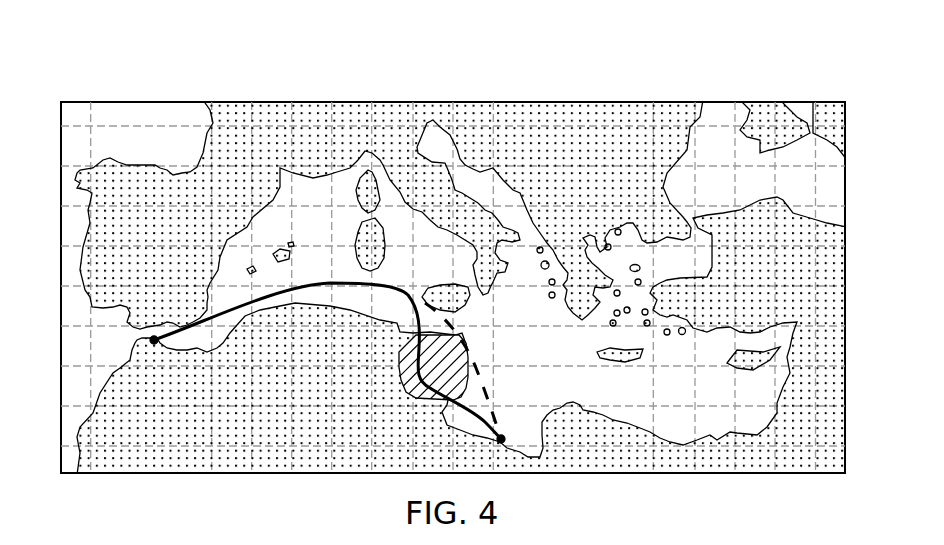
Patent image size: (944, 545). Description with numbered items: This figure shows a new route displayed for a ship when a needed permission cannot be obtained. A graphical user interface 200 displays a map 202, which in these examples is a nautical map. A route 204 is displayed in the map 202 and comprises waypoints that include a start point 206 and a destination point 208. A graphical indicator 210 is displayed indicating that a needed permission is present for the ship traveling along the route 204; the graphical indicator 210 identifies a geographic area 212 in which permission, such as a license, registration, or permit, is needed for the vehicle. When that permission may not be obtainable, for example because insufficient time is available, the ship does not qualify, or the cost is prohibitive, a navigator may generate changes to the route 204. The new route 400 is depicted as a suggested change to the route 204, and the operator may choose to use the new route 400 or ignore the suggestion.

The graphical user interface 200 is at (604, 62).
The map 202 is at (322, 101).
The route 204 is at (336, 280).
The start point 206 is at (155, 346).
The destination point 208 is at (504, 432).
The graphical indicator 210 is at (442, 409).
The geographic area 212 is at (405, 400).
The new route 400 is at (470, 340).